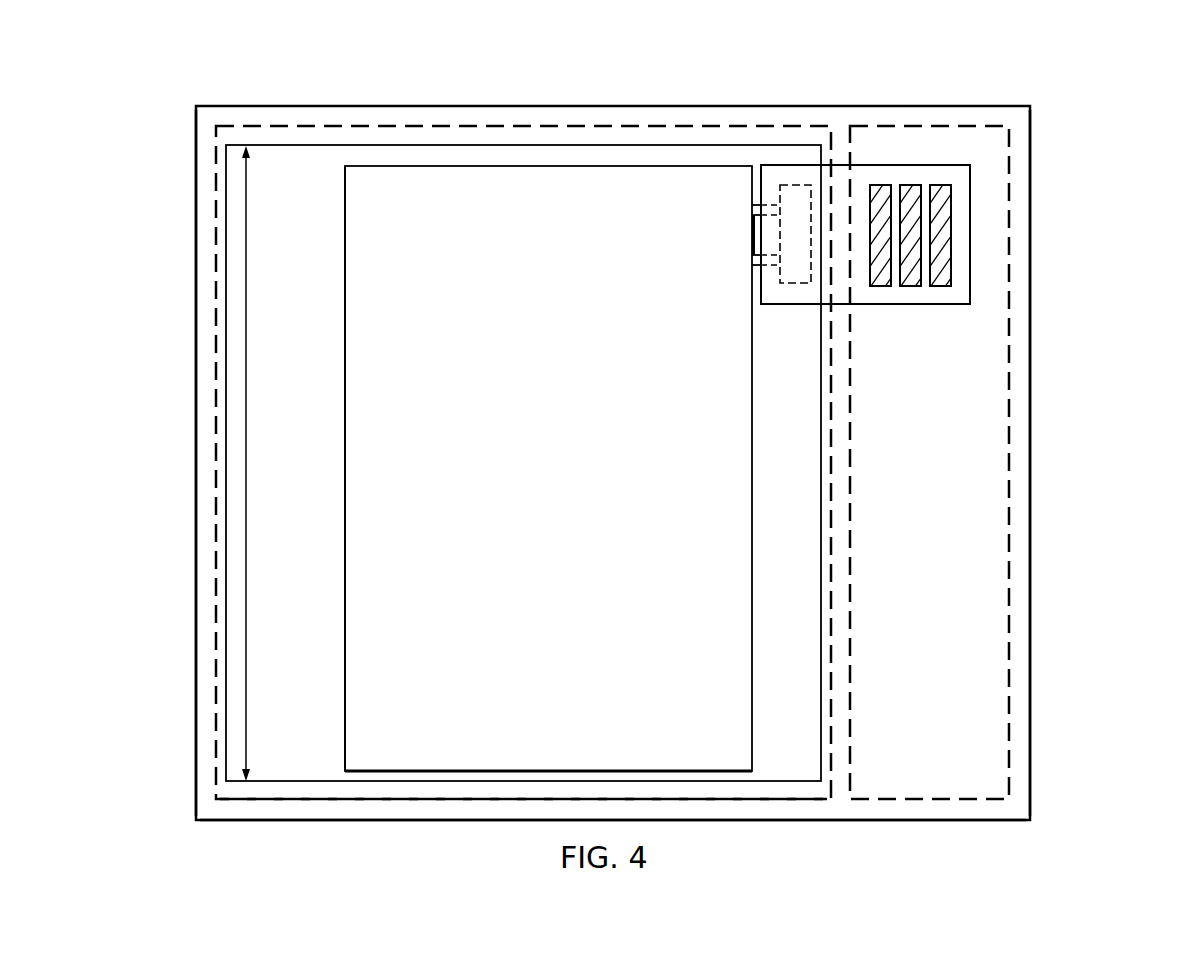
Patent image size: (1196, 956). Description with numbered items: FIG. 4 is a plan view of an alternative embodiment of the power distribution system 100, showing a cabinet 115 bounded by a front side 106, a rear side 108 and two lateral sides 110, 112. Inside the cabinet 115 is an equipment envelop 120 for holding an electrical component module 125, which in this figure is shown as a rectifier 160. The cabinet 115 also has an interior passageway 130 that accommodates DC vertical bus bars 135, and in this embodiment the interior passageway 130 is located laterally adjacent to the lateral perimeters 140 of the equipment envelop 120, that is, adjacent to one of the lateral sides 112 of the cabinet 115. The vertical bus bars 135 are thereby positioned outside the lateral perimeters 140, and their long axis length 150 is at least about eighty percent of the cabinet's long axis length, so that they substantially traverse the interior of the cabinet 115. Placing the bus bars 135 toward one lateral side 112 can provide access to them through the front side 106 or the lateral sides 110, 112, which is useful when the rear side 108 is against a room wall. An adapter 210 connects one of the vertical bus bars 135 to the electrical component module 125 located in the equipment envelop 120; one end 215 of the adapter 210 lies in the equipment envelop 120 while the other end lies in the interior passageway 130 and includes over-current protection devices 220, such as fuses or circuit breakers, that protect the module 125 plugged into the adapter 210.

The power distribution system 100 is at (1120, 336).
The front side 106 is at (375, 821).
The rear side 108 is at (948, 106).
The lateral side 110 is at (196, 463).
The lateral side 112 is at (1036, 554).
The cabinet 115 is at (494, 106).
The equipment envelop 120 is at (314, 487).
The electrical component module 125 is at (338, 374).
The interior passageway 130 is at (947, 485).
The vertical bus bars 135 is at (940, 298).
The lateral perimeters 140 is at (712, 800).
The long axis length 150 is at (246, 572).
The rectifier 160 is at (566, 482).
The adapter 210 is at (800, 305).
The end of the adapter 215 is at (758, 266).
The over-current protection device 220 is at (795, 236).